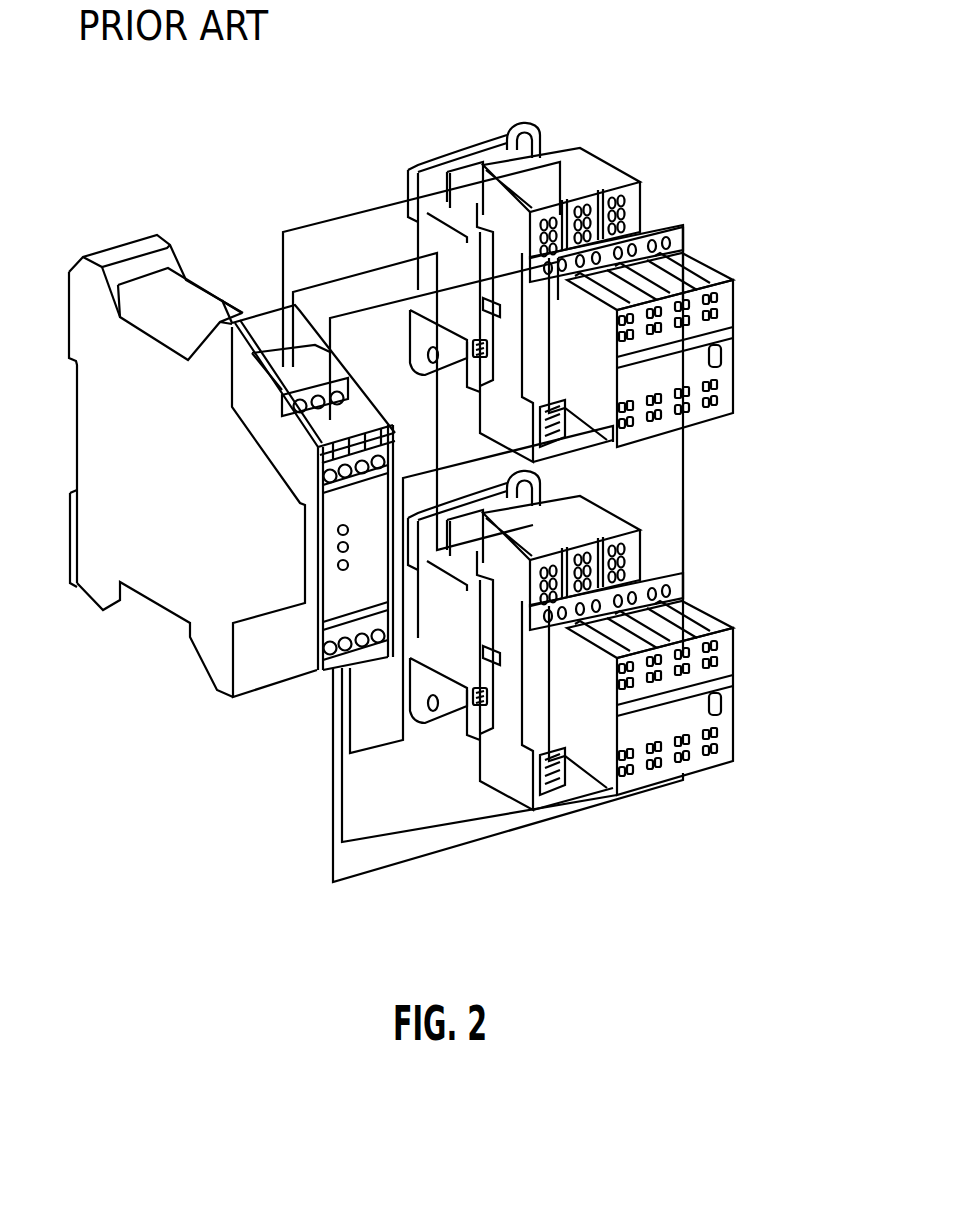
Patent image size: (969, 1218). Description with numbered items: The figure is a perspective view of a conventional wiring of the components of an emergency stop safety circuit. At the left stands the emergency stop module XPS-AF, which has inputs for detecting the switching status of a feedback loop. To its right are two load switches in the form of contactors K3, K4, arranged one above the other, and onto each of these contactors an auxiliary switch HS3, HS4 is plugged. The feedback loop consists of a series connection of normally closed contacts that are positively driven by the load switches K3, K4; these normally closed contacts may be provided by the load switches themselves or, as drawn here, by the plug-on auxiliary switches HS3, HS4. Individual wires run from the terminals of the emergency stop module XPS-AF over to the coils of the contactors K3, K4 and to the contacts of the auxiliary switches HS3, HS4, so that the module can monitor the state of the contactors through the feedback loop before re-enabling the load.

The emergency stop module XPS-AF is at (155, 568).
The load switch K3 is at (588, 173).
The load switch K4 is at (597, 520).
The auxiliary switch HS3 is at (718, 373).
The auxiliary switch HS4 is at (718, 721).